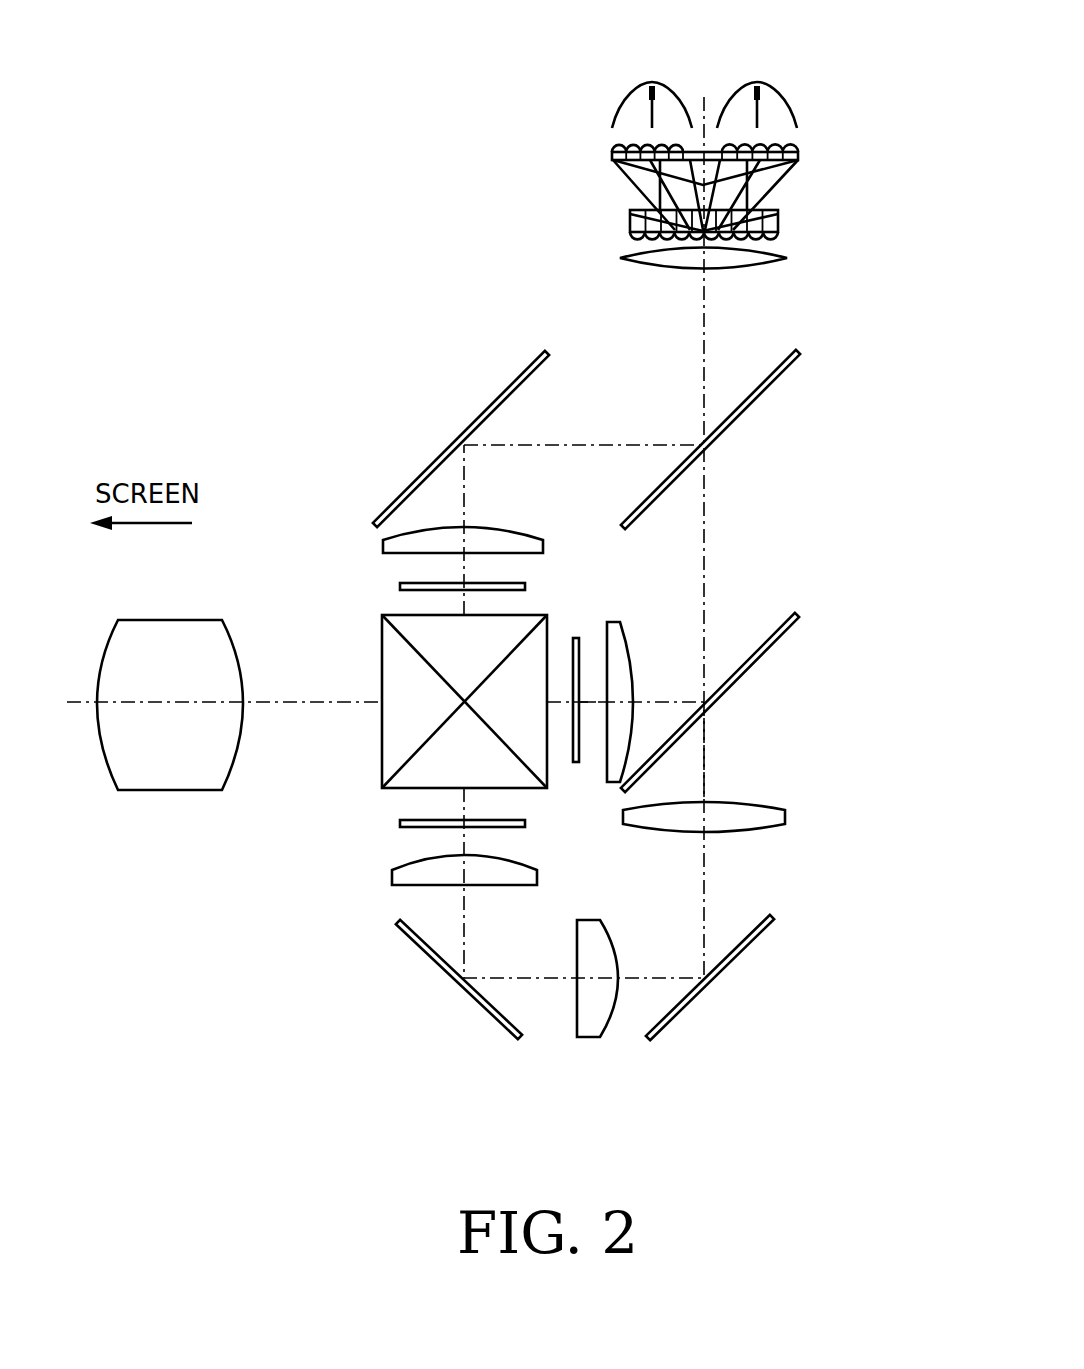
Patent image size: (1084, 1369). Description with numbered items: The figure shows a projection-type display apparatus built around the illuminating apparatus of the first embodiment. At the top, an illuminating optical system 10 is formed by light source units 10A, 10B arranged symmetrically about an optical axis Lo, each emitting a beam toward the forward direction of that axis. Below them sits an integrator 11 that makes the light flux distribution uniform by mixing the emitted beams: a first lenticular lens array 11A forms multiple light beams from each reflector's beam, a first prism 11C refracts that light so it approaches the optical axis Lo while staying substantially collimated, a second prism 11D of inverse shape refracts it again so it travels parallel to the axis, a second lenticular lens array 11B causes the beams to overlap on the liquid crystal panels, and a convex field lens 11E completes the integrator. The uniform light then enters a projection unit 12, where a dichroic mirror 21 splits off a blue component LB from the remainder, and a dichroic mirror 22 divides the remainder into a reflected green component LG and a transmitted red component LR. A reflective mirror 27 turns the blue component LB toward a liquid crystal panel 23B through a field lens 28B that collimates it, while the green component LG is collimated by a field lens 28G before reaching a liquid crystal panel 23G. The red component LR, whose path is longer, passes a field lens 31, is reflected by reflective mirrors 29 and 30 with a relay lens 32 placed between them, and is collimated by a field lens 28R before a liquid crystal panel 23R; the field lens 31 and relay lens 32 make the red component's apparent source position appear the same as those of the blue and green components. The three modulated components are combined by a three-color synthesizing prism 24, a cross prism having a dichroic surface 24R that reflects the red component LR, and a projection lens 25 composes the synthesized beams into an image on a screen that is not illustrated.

The illuminating optical system 10 is at (711, 64).
The light source unit 10A is at (780, 90).
The light source unit 10B is at (630, 90).
The integrator 11 is at (668, 204).
The first lenticular lens array 11A is at (612, 154).
The second lenticular lens array 11B is at (632, 236).
The first prism 11C is at (800, 157).
The second prism 11D is at (780, 215).
The convex field lens 11E is at (622, 258).
The projection unit 12 is at (612, 372).
The dichroic mirror 21 is at (797, 355).
The dichroic mirror 22 is at (797, 620).
The liquid crystal panel 23B is at (525, 585).
The liquid crystal panel 23G is at (578, 638).
The liquid crystal panel 23R is at (525, 824).
The three-color synthesizing prism 24 is at (473, 704).
The dichroic surface 24R is at (540, 772).
The projection lens 25 is at (203, 620).
The reflective mirror 27 is at (508, 375).
The field lens 28B is at (515, 528).
The field lens 28G is at (630, 640).
The field lens 28R is at (392, 875).
The reflective mirror 29 is at (755, 940).
The reflective mirror 30 is at (490, 1012).
The field lens 31 is at (755, 820).
The relay lens 32 is at (607, 925).
The optical axis Lo is at (706, 310).
The blue component LB is at (603, 440).
The green component LG is at (658, 698).
The red component LR is at (708, 760).